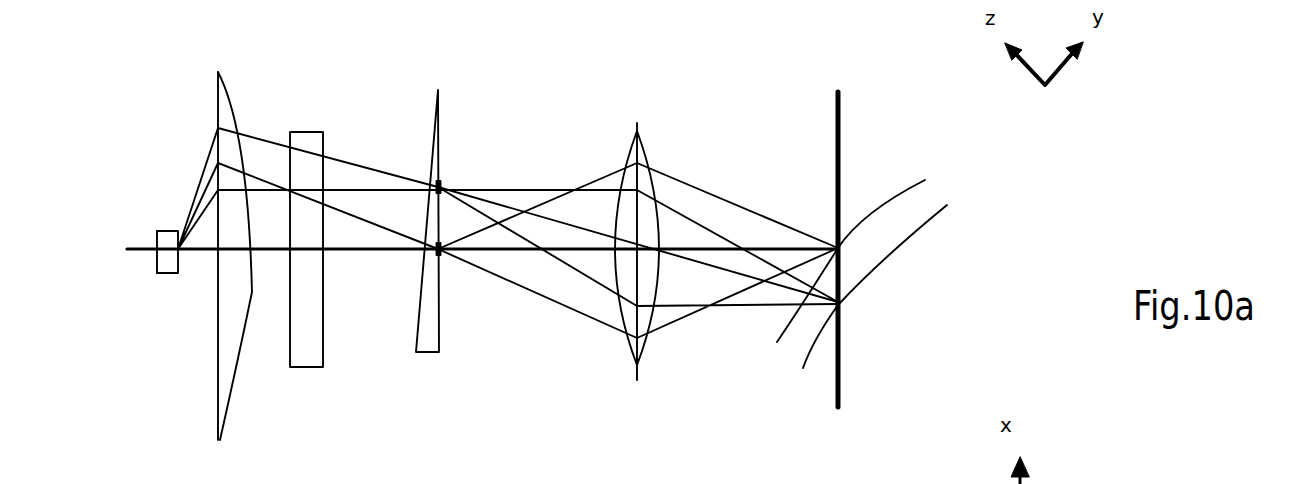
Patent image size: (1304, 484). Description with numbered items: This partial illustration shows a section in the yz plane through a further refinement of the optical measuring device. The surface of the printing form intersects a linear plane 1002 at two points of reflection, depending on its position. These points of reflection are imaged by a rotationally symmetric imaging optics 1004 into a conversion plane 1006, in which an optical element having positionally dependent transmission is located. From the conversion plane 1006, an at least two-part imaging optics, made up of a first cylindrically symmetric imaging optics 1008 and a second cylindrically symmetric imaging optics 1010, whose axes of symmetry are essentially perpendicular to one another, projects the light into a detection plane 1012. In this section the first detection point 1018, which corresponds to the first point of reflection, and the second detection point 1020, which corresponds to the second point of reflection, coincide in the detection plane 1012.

The linear plane 1002 is at (844, 347).
The rotationally symmetric imaging optics 1004 is at (643, 340).
The conversion plane 1006 is at (442, 320).
The first cylindrically symmetric imaging optics 1008 is at (323, 335).
The second cylindrically symmetric imaging optics 1010 is at (252, 295).
The detection plane 1012 is at (836, 245).
The first detection point 1018 is at (181, 228).
The second detection point 1020 is at (183, 231).